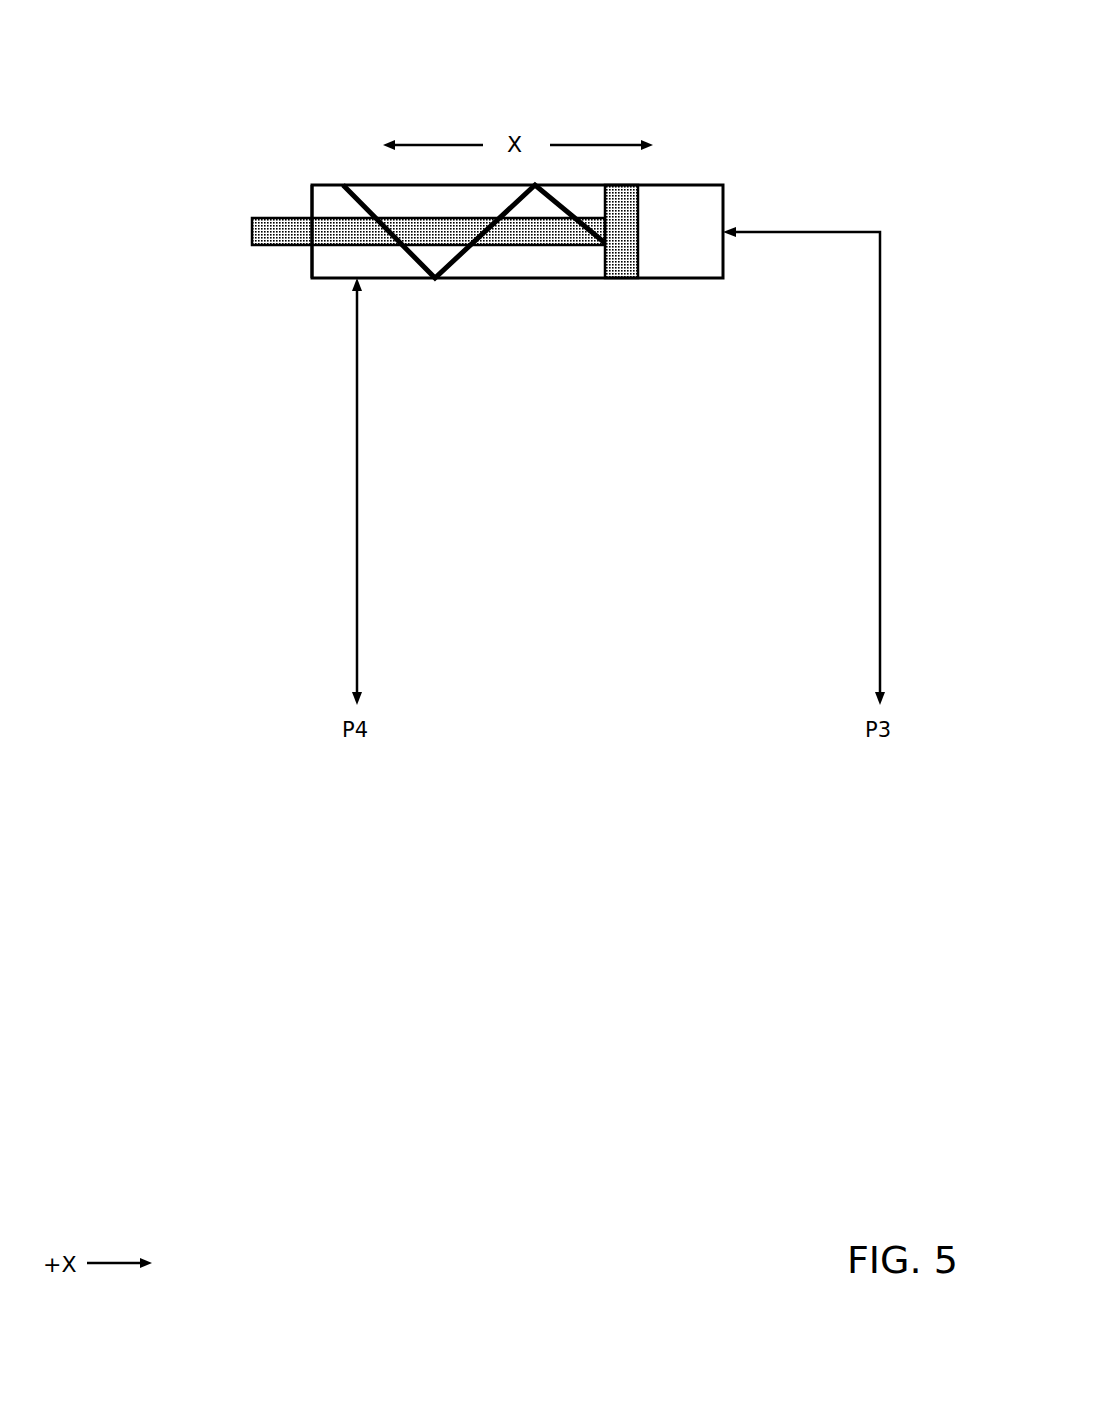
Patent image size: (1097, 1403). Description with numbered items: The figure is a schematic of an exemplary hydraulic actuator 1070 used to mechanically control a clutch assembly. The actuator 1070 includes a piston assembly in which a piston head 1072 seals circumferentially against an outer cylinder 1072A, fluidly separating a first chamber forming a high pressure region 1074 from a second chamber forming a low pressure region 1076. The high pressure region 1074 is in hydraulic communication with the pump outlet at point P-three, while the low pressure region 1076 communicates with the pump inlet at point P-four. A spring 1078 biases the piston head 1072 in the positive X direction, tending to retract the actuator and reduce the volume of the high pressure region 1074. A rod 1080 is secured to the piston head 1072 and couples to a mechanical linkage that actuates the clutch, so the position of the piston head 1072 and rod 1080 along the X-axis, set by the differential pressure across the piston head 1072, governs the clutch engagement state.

The actuator 1070 is at (791, 96).
The piston head 1072 is at (622, 260).
The outer cylinder 1072A is at (323, 278).
The high pressure region 1074 is at (680, 250).
The low pressure region 1076 is at (508, 260).
The spring 1078 is at (405, 278).
The rod 1080 is at (275, 225).